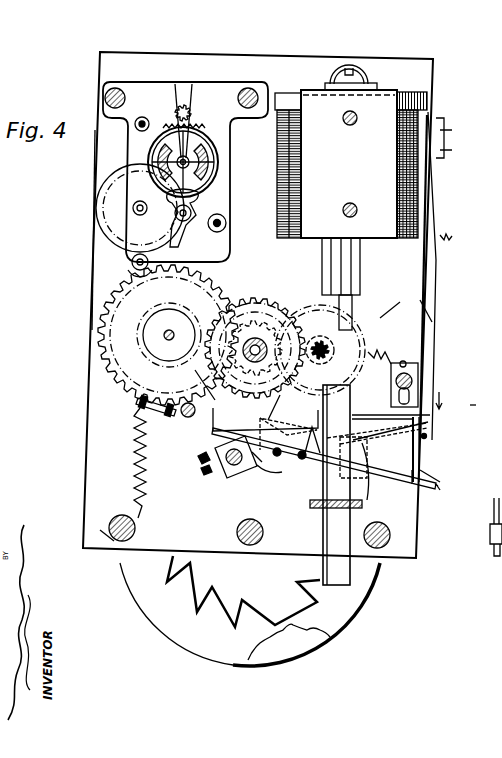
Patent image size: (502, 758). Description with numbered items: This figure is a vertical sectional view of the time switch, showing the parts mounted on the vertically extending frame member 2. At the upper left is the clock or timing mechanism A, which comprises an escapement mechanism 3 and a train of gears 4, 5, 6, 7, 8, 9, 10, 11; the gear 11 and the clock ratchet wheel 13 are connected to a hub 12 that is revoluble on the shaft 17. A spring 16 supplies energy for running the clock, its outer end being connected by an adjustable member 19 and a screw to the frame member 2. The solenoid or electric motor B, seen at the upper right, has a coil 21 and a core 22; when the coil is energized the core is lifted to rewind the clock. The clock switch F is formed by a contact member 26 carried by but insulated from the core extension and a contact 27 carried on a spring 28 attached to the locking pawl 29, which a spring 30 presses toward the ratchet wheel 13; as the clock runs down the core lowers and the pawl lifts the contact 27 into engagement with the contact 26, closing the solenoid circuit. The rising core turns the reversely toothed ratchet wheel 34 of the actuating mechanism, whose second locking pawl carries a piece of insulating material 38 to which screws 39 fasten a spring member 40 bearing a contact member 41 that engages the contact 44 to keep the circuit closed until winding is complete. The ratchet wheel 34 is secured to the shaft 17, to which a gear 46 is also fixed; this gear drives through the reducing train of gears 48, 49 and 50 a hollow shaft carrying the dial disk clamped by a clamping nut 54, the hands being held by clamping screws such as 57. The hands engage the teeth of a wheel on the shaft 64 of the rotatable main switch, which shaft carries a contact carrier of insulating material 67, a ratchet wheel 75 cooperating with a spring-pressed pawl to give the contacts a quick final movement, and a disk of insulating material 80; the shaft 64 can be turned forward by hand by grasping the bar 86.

The vertically extending frame member 2 is at (415, 293).
The escapement mechanism 3 is at (207, 226).
The gear 4 is at (195, 230).
The gear 5 is at (103, 190).
The gear 6 is at (128, 212).
The gear 7 is at (95, 252).
The gear 8 is at (130, 268).
The gear 9 is at (108, 365).
The gear 10 is at (140, 352).
The gear 11 is at (243, 292).
The hub 12 is at (255, 351).
The ratchet wheel 13 is at (280, 300).
The spring 16 is at (432, 325).
The shaft 17 is at (255, 342).
The adjustable member 19 is at (418, 374).
The coil 21 is at (420, 196).
The core 22 is at (355, 305).
The contact member 26 is at (421, 468).
The contact 27 is at (434, 487).
The spring 28 is at (303, 524).
The locking pawl 29 is at (213, 437).
The spring 30 is at (134, 474).
The ratchet wheel 34 is at (348, 326).
The piece of insulating material 38 is at (240, 480).
The screws 39 is at (284, 472).
The spring member 40 is at (358, 485).
The contact member 41 is at (428, 434).
The contact 44 is at (437, 474).
The gear 46 is at (140, 392).
The gear 48 is at (400, 302).
The gear 49 is at (433, 320).
The gear 50 is at (238, 290).
The clamping nut 54 is at (483, 406).
The clamping screw 57 is at (462, 391).
The shaft 64 is at (501, 576).
The contact carrier of insulating material 67 is at (287, 650).
The ratchet wheel 75 is at (202, 590).
The disk of insulating material 80 is at (213, 650).
The bar 86 is at (492, 512).
The clock or timing mechanism A is at (200, 203).
The solenoid or electric motor B is at (452, 140).
The clock switch F is at (460, 485).